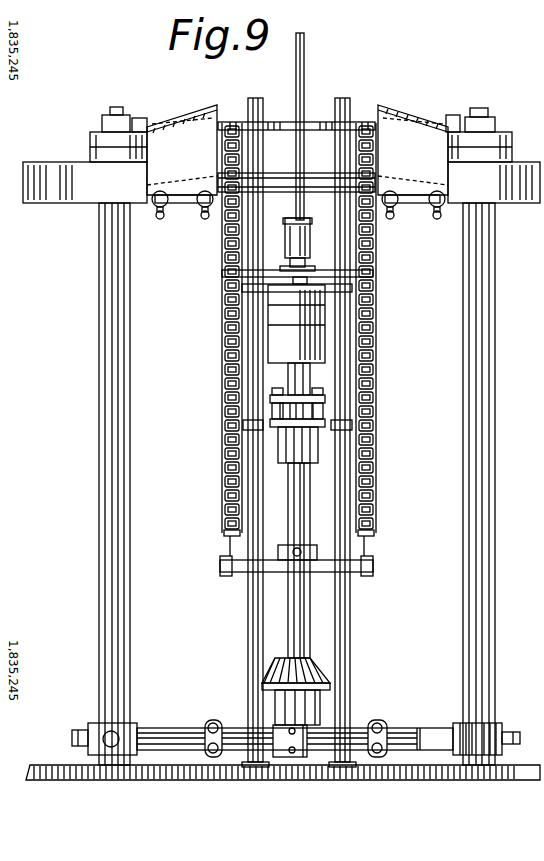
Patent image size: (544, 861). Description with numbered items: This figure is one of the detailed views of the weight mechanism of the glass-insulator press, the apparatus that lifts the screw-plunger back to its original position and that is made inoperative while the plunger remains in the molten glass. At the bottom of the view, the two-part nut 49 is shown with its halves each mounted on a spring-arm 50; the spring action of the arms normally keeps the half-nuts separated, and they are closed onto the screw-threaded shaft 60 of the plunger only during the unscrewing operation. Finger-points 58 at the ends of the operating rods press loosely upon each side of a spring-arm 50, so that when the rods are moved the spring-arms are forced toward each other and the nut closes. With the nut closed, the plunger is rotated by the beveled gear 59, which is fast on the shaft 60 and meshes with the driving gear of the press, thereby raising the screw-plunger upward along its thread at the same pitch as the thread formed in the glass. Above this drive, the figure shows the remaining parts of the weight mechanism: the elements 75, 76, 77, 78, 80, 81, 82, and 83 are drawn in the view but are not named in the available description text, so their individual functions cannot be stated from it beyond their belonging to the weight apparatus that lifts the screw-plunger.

The two-part nut 49 is at (283, 725).
The spring-arm 50 is at (164, 728).
The finger-points 58 is at (210, 726).
The beveled gear 59 is at (320, 676).
The shaft 60 is at (297, 614).
The chains (lower) 75 is at (223, 478).
The motor cylinder 76 is at (312, 336).
The lower cross bar 77 is at (374, 567).
The chains (upper) 78 is at (223, 228).
The upright posts 80 is at (123, 386).
The upper cross bar 81 is at (374, 275).
The hoppers 82 is at (181, 140).
The top cross bar 83 is at (272, 178).